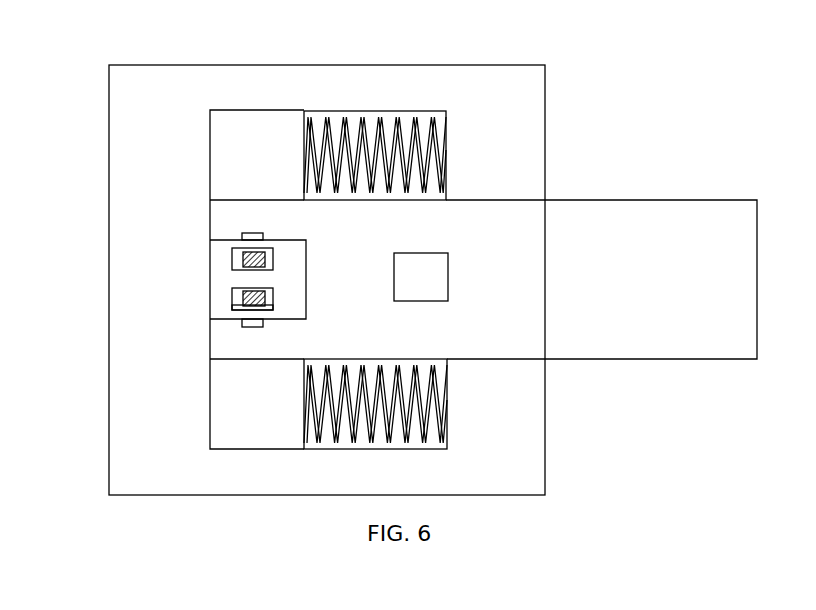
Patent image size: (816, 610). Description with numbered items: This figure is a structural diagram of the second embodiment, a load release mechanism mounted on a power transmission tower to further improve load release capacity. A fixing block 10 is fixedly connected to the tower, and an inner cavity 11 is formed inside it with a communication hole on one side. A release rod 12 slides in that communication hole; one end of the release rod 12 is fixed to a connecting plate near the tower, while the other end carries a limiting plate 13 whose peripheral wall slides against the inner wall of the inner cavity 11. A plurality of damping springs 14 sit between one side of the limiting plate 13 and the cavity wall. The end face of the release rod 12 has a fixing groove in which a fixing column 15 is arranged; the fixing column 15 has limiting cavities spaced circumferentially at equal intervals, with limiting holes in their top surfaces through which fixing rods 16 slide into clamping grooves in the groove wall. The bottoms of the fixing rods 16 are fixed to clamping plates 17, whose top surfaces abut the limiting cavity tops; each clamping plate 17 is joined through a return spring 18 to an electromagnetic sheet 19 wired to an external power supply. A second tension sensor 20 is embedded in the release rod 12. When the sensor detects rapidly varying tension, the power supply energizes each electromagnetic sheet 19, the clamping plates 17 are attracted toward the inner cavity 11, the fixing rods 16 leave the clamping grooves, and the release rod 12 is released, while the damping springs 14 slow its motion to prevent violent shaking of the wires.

The fixing block 10 is at (291, 277).
The inner cavity 11 is at (404, 103).
The release rod 12 is at (601, 241).
The limiting plate 13 is at (235, 227).
The damping springs 14 is at (365, 96).
The fixing column 15 is at (161, 271).
The fixing rods 16 is at (181, 267).
The clamping plates 17 is at (154, 371).
The return springs 18 is at (154, 337).
The electromagnetic sheets 19 is at (154, 316).
The second tension sensor 20 is at (513, 345).